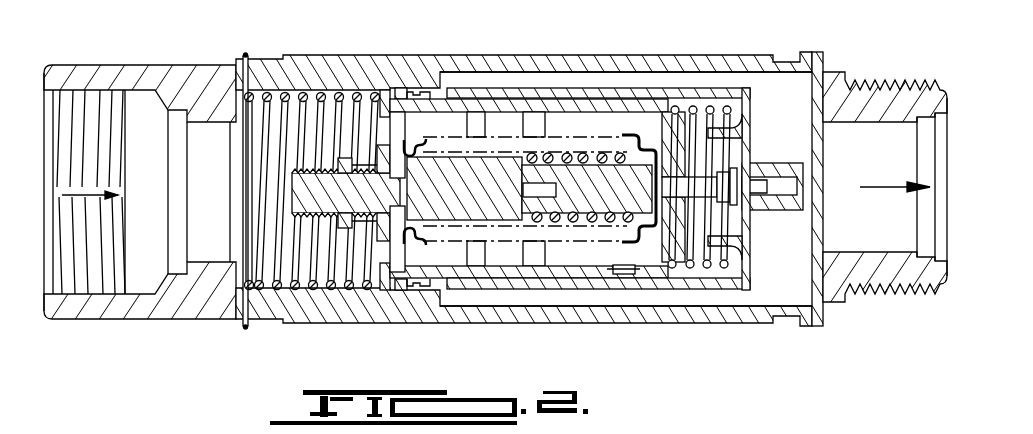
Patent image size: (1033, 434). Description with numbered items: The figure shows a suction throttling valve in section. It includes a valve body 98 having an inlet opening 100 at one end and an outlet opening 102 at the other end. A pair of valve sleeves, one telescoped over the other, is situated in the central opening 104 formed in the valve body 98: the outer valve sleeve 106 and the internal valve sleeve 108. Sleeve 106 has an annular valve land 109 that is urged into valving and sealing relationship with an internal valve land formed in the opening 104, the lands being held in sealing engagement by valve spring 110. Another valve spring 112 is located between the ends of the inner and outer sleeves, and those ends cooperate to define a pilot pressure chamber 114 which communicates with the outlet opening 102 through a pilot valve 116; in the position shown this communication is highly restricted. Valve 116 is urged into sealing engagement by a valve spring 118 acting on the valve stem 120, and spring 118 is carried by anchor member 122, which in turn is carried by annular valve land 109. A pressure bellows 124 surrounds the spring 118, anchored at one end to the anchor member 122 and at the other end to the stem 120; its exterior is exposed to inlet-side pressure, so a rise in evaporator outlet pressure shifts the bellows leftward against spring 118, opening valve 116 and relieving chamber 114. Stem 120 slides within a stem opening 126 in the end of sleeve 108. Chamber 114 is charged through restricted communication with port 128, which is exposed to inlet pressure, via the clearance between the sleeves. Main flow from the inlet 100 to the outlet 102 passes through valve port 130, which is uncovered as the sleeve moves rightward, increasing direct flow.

The valve body 98 is at (509, 58).
The inlet opening 100 is at (203, 118).
The outlet opening 102 is at (861, 122).
The central opening 104 is at (613, 72).
The outer valve sleeve 106 is at (557, 88).
The internal valve sleeve 108 is at (633, 108).
The annular valve land 109 is at (384, 92).
The valve spring 110 is at (277, 288).
The valve spring 112 is at (710, 107).
The pilot pressure chamber 114 is at (711, 276).
The pilot valve 116 is at (743, 173).
The valve spring 118 is at (573, 213).
The valve stem 120 is at (707, 192).
The anchor member 122 is at (340, 192).
The pressure bellows 124 is at (418, 140).
The stem opening 126 is at (700, 170).
The port 128 is at (622, 275).
The valve port 130 is at (560, 278).